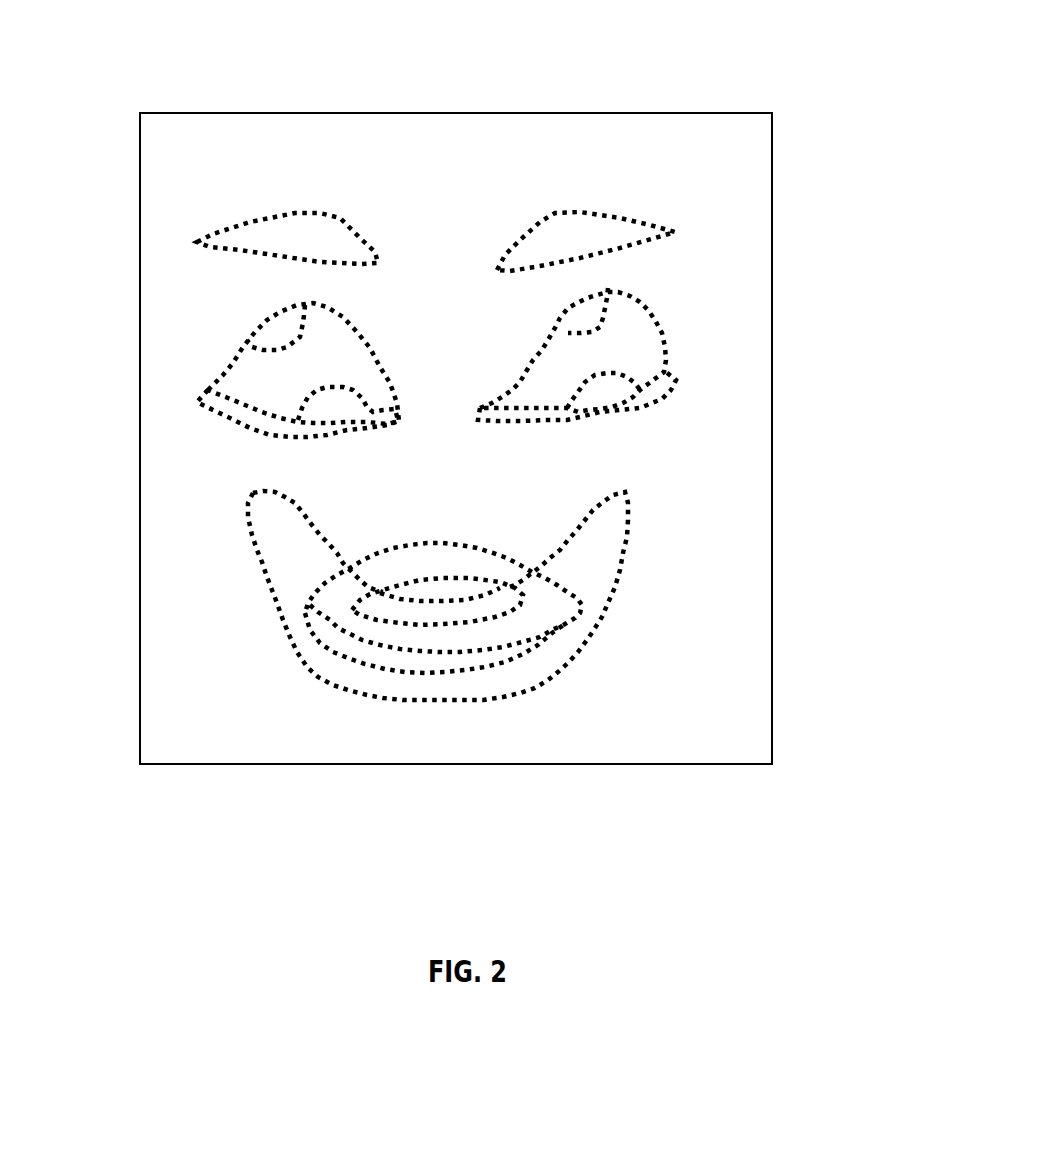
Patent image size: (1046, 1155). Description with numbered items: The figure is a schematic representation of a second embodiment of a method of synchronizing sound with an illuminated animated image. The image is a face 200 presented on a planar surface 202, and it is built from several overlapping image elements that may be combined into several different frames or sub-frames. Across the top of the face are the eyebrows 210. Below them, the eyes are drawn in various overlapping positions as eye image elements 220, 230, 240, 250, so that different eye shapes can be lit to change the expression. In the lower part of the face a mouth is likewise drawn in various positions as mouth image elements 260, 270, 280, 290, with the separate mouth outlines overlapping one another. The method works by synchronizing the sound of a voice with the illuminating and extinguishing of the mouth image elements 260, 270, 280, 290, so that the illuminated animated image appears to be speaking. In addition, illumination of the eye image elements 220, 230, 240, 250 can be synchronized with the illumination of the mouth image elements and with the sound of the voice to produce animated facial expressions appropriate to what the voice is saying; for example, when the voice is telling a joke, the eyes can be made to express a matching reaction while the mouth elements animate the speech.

The face 200 is at (782, 84).
The planar surface 202 is at (748, 703).
The eyebrows 210 is at (548, 215).
The eyes 220 is at (543, 350).
The eyes 230 is at (300, 337).
The eyes 240 is at (621, 377).
The eyes 250 is at (248, 434).
The mouth 260 is at (266, 580).
The mouth 270 is at (368, 655).
The mouth 280 is at (478, 620).
The mouth 290 is at (547, 622).